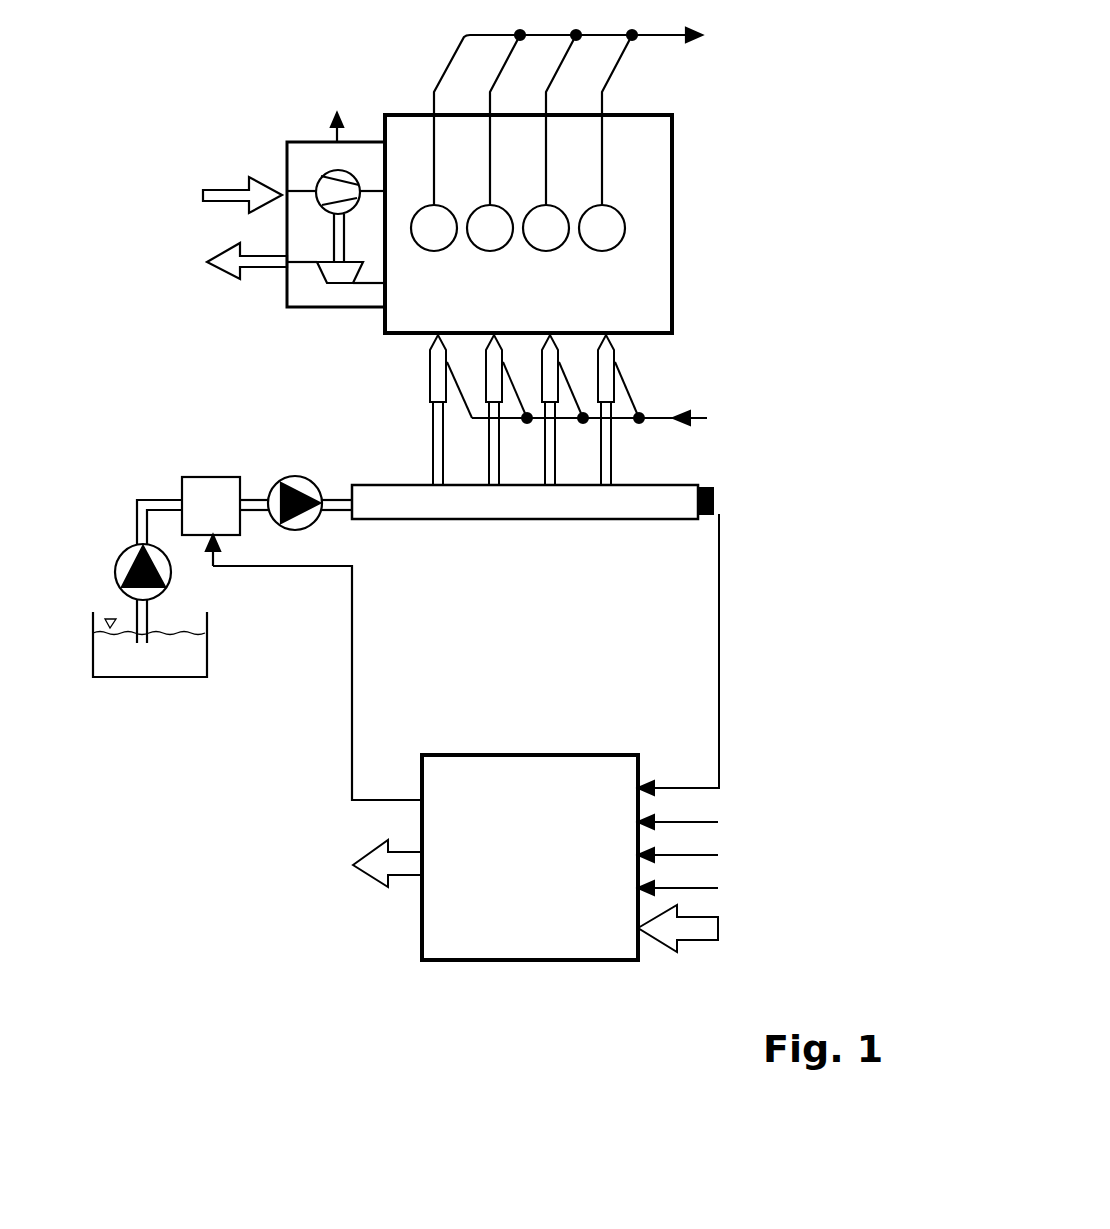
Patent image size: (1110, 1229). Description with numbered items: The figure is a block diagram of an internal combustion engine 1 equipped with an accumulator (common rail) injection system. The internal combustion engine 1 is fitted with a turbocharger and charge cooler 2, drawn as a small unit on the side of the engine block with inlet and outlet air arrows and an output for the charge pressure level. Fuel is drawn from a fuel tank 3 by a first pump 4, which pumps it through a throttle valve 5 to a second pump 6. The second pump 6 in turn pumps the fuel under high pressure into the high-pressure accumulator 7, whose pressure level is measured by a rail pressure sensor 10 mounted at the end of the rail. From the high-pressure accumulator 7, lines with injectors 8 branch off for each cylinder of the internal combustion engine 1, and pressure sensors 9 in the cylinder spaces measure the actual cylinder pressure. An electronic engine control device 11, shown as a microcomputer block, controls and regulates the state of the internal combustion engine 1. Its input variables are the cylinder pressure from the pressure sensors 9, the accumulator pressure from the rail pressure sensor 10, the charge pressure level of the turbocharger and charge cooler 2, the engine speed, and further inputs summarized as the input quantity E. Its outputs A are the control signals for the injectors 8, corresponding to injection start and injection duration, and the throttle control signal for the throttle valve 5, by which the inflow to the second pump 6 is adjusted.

The internal combustion engine 1 is at (652, 315).
The turbocharger and charge cooler 2 is at (326, 293).
The fuel tank 3 is at (197, 657).
The first pump 4 is at (118, 553).
The throttle valve 5 is at (221, 522).
The second pump 6 is at (297, 476).
The high-pressure accumulator 7 is at (488, 513).
The injectors 8 is at (436, 370).
The pressure sensors 9 is at (611, 242).
The rail pressure sensor 10 is at (716, 503).
The electronic engine control device 11 is at (627, 940).